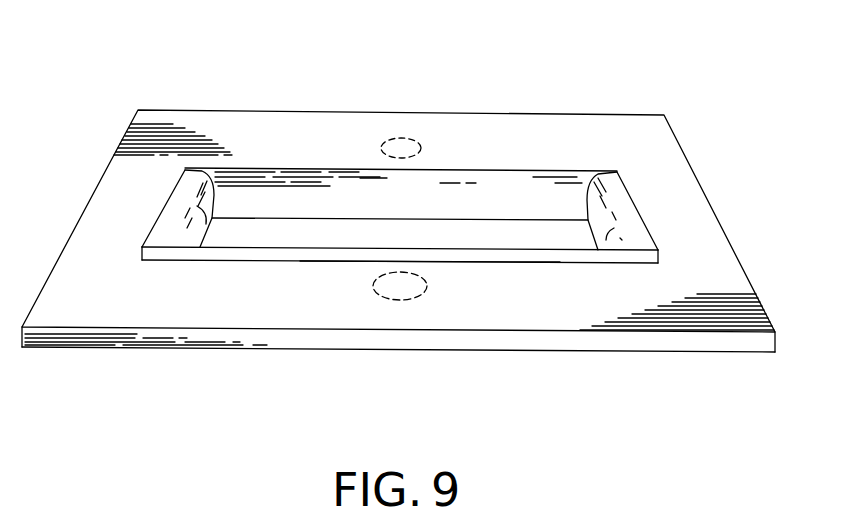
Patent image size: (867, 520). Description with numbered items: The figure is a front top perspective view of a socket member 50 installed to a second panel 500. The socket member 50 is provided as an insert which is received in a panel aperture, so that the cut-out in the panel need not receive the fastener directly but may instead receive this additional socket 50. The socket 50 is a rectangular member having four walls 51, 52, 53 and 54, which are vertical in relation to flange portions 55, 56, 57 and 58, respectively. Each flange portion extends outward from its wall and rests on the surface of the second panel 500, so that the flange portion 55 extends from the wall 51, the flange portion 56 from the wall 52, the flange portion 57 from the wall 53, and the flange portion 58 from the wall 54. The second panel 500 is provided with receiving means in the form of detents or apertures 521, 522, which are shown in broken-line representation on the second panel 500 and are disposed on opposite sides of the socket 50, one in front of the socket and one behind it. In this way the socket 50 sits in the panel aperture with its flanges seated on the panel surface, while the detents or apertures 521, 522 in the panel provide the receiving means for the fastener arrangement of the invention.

The second panel 500 is at (675, 188).
The socket member 50 is at (501, 170).
The wall 51 is at (204, 224).
The wall 52 is at (307, 208).
The wall 53 is at (612, 245).
The wall 54 is at (318, 247).
The flange portion 55 is at (182, 187).
The flange portion 56 is at (460, 183).
The flange portion 57 is at (615, 190).
The flange portion 58 is at (440, 262).
The detent or aperture 521 is at (407, 300).
The detent or aperture 522 is at (403, 137).